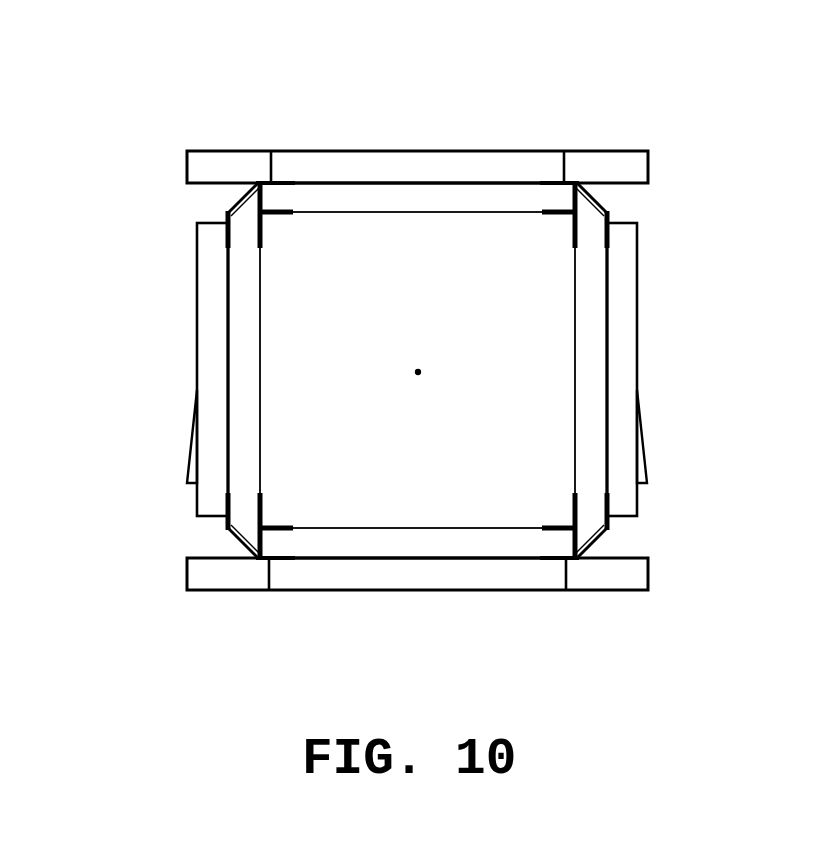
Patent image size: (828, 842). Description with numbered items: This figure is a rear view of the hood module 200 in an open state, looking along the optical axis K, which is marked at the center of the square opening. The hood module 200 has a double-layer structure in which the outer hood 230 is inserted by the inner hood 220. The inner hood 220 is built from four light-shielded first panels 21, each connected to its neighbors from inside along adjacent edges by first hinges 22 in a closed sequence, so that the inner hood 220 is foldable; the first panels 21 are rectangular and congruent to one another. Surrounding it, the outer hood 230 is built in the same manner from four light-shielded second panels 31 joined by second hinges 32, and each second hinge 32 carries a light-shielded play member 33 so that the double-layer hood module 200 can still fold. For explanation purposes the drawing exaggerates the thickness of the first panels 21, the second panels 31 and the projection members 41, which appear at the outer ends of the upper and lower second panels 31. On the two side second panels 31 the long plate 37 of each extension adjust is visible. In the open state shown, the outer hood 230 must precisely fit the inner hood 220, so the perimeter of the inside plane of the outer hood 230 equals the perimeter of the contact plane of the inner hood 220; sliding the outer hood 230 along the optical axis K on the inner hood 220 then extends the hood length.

The hood module 200 is at (133, 84).
The outer hood 230 is at (417, 130).
The inner hood 220 is at (422, 504).
The projection member 41 is at (198, 166).
The second hinge 32 is at (267, 180).
The first panel 21 is at (329, 202).
The second panel 31 is at (508, 170).
The play member 33 is at (232, 207).
The first hinge 22 is at (281, 213).
The long plate 37 is at (190, 435).
The optical axis K is at (420, 372).